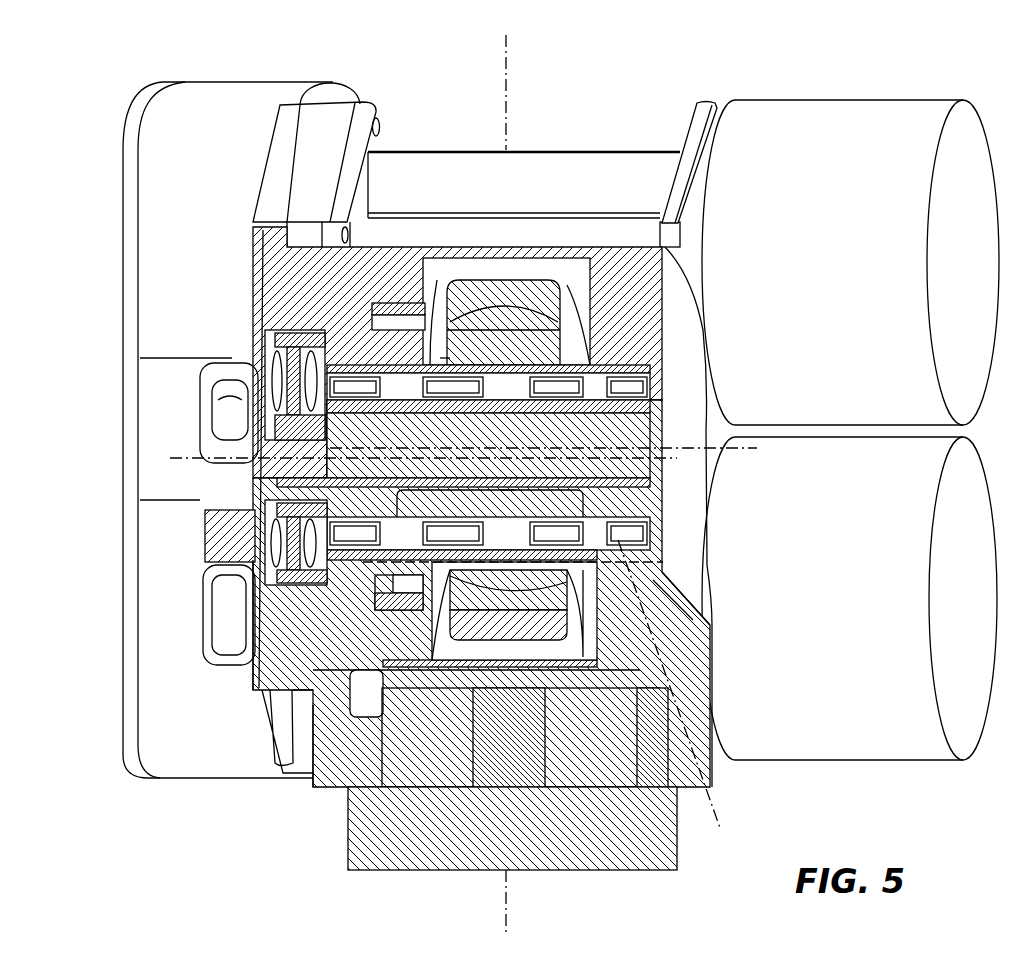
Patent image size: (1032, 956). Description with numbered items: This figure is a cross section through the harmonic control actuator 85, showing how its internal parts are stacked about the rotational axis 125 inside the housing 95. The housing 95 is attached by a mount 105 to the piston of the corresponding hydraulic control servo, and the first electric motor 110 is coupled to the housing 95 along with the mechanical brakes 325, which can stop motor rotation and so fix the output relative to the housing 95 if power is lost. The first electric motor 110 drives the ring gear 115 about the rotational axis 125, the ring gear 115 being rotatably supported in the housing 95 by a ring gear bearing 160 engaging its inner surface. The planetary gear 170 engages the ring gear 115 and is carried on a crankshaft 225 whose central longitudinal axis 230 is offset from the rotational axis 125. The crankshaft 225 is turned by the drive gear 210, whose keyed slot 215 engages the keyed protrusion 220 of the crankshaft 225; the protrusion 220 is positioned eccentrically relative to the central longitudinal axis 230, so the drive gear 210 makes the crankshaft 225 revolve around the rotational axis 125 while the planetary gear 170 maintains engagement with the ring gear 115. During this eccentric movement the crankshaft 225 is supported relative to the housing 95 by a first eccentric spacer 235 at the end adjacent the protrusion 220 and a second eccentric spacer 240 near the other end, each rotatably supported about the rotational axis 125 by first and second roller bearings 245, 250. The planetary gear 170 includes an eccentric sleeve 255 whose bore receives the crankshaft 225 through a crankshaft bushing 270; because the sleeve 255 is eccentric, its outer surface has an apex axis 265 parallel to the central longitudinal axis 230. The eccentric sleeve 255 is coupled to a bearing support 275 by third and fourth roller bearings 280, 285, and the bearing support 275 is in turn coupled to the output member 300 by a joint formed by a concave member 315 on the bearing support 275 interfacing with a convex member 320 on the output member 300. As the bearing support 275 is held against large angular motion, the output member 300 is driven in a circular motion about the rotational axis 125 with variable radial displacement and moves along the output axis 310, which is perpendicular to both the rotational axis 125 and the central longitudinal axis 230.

The harmonic control actuator 85 is at (752, 63).
The housing 95 is at (202, 80).
The mount 105 is at (630, 870).
The first electric motor 110 is at (632, 150).
The ring gear 115 is at (345, 690).
The rotational axis 125 is at (172, 458).
The ring gear bearing 160 is at (333, 695).
The planetary gear 170 is at (340, 787).
The drive gear 210 is at (250, 548).
The keyed slot 215 is at (273, 507).
The keyed protrusion 220 is at (280, 427).
The crankshaft 225 is at (665, 345).
The central longitudinal axis 230 is at (705, 440).
The first eccentric spacer 235 is at (367, 375).
The second eccentric spacer 240 is at (657, 490).
The first roller bearing 245 is at (280, 605).
The second roller bearing 250 is at (645, 545).
The eccentric sleeve 255 is at (507, 490).
The apex axis 265 is at (686, 697).
The crankshaft bushing 270 is at (655, 520).
The bearing support 275 is at (540, 340).
The third roller bearing 280 is at (460, 278).
The fourth roller bearing 285 is at (552, 365).
The output member 300 is at (495, 280).
The output axis 310 is at (507, 78).
The concave member 315 is at (345, 230).
The convex member 320 is at (445, 358).
The mechanical brakes 325 is at (880, 100).